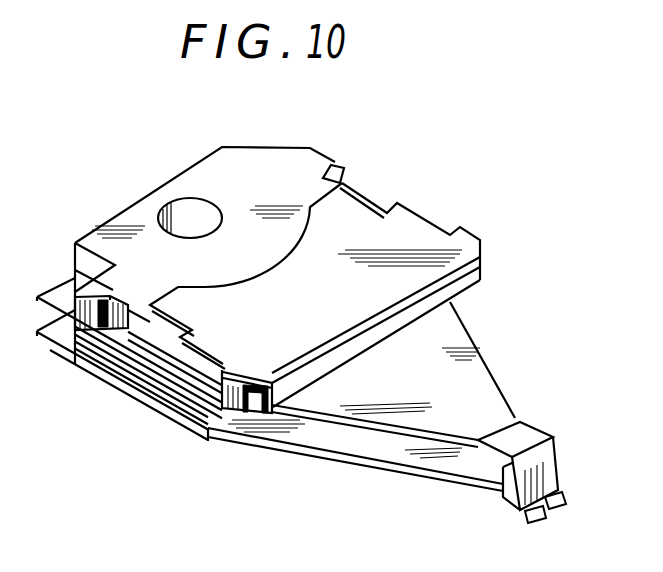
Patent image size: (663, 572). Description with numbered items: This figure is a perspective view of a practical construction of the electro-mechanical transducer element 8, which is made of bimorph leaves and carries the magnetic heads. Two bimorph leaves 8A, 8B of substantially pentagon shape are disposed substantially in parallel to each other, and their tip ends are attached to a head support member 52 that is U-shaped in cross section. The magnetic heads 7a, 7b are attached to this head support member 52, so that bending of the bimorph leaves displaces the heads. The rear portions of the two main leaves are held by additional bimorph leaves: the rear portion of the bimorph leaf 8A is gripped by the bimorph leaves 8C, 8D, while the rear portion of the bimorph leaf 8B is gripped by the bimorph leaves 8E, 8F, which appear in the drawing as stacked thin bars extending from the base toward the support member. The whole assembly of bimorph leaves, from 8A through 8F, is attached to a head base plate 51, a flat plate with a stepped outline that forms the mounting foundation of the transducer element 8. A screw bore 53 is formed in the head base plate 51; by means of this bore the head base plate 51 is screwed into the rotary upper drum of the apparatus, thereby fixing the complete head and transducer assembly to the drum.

The electro-mechanical transducer element 8 is at (512, 334).
The bimorph leaf 8A is at (493, 378).
The bimorph leaf 8B is at (350, 447).
The bimorph leaf 8C is at (195, 432).
The bimorph leaf 8D is at (163, 410).
The bimorph leaf 8E is at (130, 395).
The bimorph leaf 8F is at (83, 370).
The head base plate 51 is at (325, 163).
The head support member 52 is at (552, 440).
The screw bore 53 is at (182, 210).
The magnetic head 7a is at (572, 500).
The magnetic head 7b is at (545, 518).